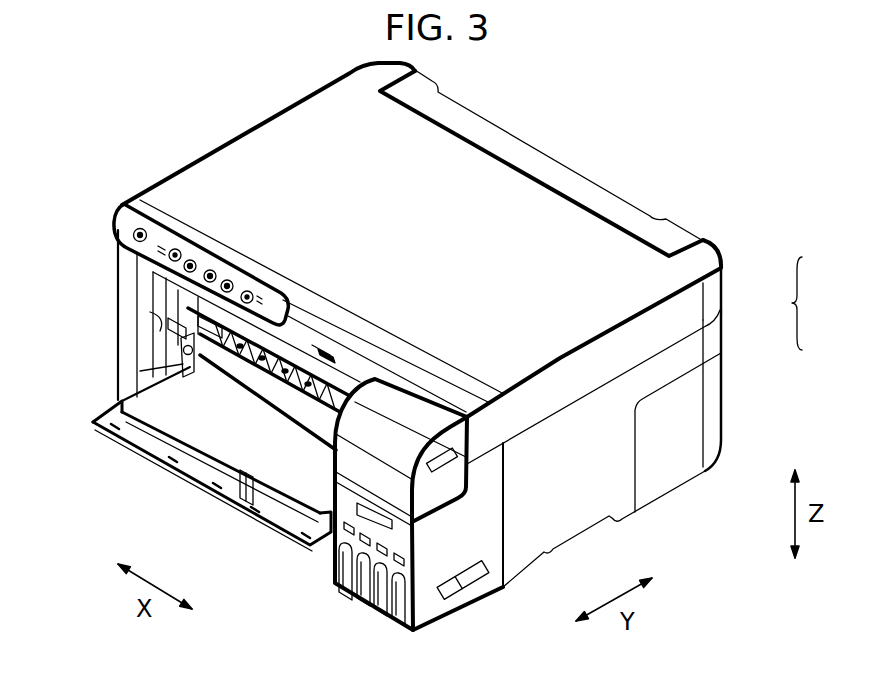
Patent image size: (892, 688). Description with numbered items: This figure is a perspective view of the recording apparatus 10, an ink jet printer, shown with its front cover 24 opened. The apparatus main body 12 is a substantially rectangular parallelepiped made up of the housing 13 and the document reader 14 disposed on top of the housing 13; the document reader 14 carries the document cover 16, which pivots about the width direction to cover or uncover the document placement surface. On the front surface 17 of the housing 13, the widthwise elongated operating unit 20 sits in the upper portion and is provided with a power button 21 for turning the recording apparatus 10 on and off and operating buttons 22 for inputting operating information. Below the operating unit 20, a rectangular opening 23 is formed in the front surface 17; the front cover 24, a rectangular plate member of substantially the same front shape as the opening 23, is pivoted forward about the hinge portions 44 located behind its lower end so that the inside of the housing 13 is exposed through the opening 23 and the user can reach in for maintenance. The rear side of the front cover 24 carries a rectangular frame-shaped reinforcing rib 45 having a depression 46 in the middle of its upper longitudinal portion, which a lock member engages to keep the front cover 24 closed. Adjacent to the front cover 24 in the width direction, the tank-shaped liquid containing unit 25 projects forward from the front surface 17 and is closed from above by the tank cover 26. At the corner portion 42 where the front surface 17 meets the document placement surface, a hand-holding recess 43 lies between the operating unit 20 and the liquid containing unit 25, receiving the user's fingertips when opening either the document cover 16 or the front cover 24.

The recording apparatus 10 is at (482, 346).
The apparatus main body 12 is at (817, 303).
The housing 13 is at (727, 324).
The document reader 14 is at (727, 273).
The document cover 16 is at (222, 168).
The front surface 17 is at (128, 279).
The operating unit 20 is at (126, 222).
The power button 21 is at (139, 222).
The operating buttons 22 is at (236, 280).
The opening 23 is at (162, 324).
The front cover 24 is at (116, 405).
The liquid containing unit 25 is at (337, 558).
The tank cover 26 is at (353, 468).
The corner portion 42 is at (385, 351).
The hand-holding recess 43 is at (326, 356).
The hinge portions 44 is at (203, 369).
The reinforcing rib 45 is at (163, 434).
The depression 46 is at (241, 469).